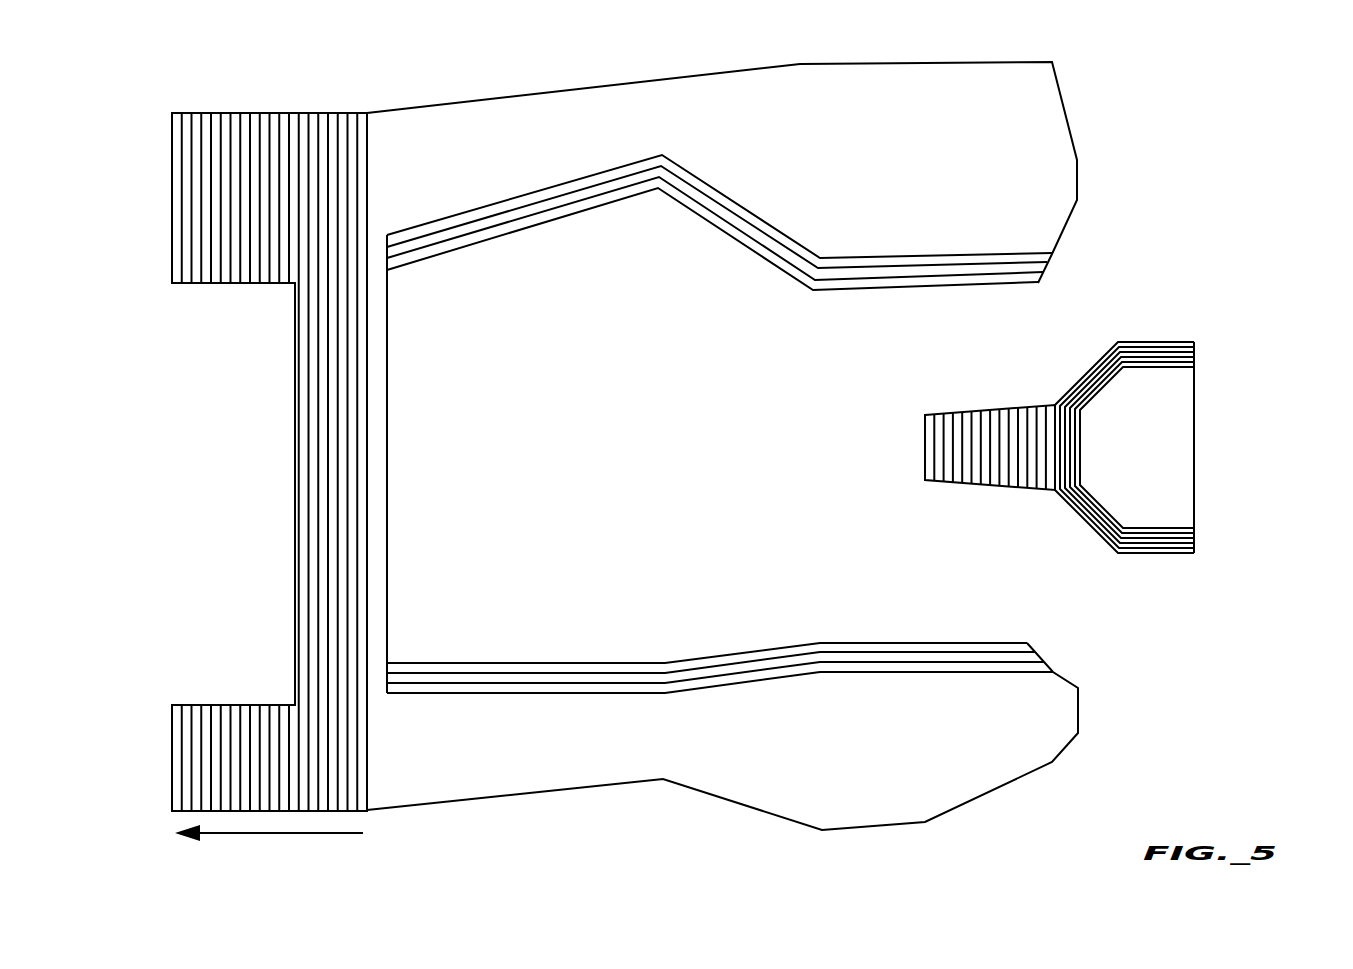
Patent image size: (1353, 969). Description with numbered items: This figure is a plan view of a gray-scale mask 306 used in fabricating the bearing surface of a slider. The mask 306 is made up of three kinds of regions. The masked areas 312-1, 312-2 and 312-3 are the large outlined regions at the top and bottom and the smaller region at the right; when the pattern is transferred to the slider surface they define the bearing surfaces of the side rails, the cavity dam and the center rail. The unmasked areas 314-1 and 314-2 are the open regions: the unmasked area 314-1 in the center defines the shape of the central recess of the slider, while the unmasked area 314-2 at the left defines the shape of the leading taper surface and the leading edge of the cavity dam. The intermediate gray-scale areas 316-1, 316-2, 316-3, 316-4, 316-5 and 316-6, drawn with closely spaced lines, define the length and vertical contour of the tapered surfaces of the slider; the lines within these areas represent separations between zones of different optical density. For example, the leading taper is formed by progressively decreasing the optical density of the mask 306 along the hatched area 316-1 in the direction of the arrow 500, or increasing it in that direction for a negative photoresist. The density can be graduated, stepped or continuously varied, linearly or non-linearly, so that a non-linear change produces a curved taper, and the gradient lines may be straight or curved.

The gray-scale mask 306 is at (711, 419).
The masked area 312-1 is at (683, 77).
The masked area 312-2 is at (598, 788).
The masked area 312-3 is at (1103, 498).
The unmasked area 314-1 is at (632, 461).
The unmasked area 314-2 is at (270, 461).
The intermediate gray-scale area 316-1 is at (367, 105).
The intermediate gray-scale area 316-2 is at (1052, 252).
The intermediate gray-scale area 316-3 is at (1038, 639).
The intermediate gray-scale area 316-4 is at (1053, 406).
The intermediate gray-scale area 316-5 is at (1148, 333).
The intermediate gray-scale area 316-6 is at (1156, 562).
The arrow 500 is at (232, 836).